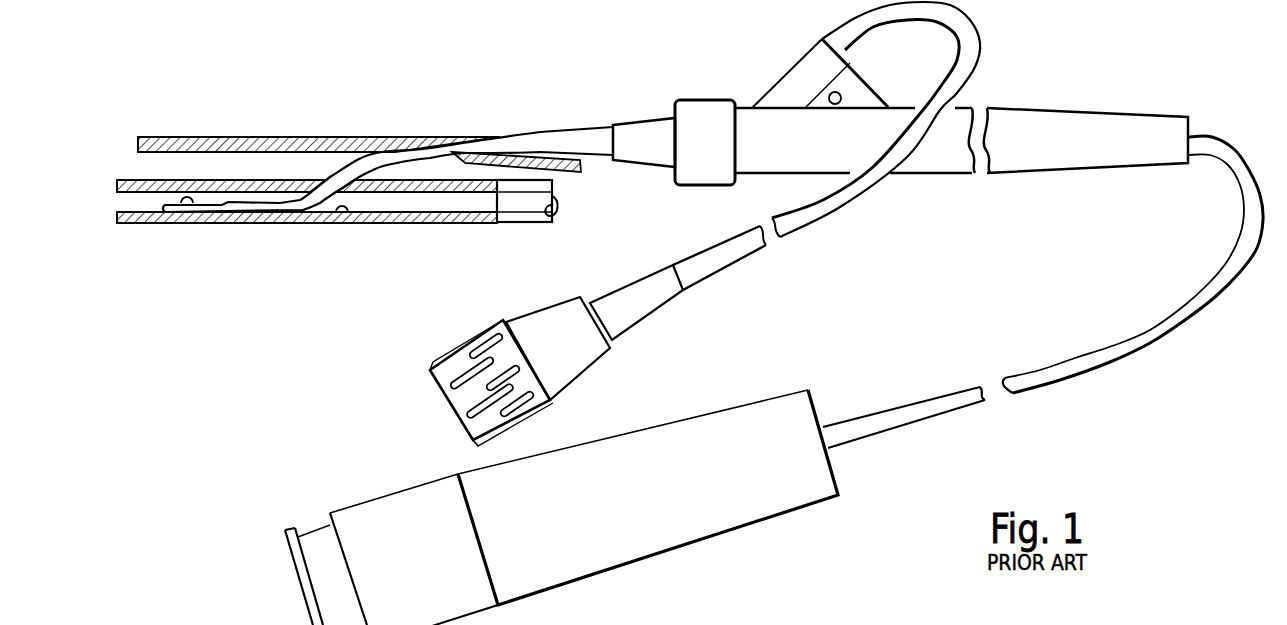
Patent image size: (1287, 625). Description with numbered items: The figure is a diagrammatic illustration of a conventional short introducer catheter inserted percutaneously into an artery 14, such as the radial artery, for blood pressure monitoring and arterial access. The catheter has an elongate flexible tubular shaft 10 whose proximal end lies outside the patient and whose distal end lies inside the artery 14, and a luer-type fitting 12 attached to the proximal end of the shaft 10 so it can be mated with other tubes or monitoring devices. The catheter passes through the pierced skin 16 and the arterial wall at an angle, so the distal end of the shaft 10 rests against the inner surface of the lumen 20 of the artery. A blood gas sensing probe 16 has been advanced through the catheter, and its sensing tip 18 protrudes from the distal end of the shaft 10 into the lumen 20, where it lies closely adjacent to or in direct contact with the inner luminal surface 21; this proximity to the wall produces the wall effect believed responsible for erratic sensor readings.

The tubular shaft 10 is at (463, 140).
The fitting 12 is at (637, 115).
The artery 14 is at (441, 224).
The skin 16 is at (338, 137).
The sensing tip 18 is at (145, 224).
The lumen 20 is at (132, 200).
The inner luminal surface 21 is at (347, 224).